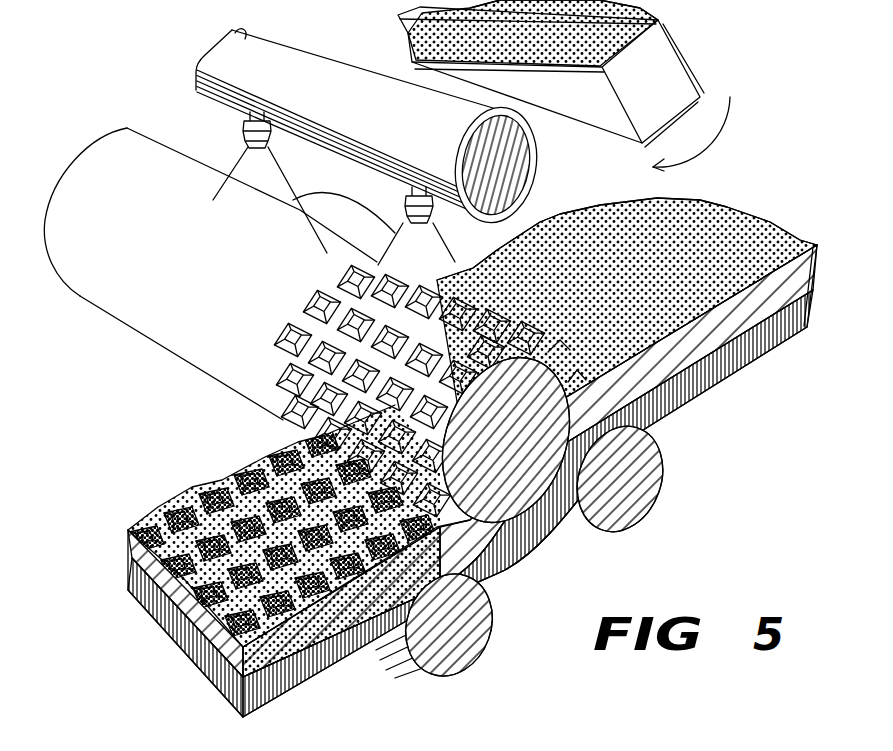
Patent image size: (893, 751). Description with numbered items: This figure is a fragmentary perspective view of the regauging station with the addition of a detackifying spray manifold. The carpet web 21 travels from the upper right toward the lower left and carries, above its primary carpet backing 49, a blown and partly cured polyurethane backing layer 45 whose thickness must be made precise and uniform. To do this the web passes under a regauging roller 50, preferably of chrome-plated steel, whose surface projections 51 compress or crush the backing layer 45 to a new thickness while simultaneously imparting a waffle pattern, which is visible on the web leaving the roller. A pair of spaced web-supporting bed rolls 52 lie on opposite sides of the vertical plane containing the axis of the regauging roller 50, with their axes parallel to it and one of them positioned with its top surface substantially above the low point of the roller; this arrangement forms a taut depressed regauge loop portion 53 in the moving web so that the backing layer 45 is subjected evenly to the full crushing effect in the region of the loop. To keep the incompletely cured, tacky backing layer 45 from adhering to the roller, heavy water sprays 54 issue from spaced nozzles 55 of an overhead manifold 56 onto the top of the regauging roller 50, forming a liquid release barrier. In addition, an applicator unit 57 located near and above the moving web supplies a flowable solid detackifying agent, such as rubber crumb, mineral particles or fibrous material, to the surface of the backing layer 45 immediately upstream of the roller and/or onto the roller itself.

The carpet web 21 is at (479, 481).
The backing layer 45 is at (748, 223).
The primary carpet backing 49 is at (700, 383).
The regauging roller 50 is at (317, 334).
The surface projections 51 is at (298, 326).
The bed rolls 52 is at (633, 498).
The regauge loop portion 53 is at (540, 539).
The water sprays 54 is at (334, 206).
The nozzles 55 is at (247, 114).
The overhead manifold 56 is at (303, 58).
The applicator unit 57 is at (673, 72).